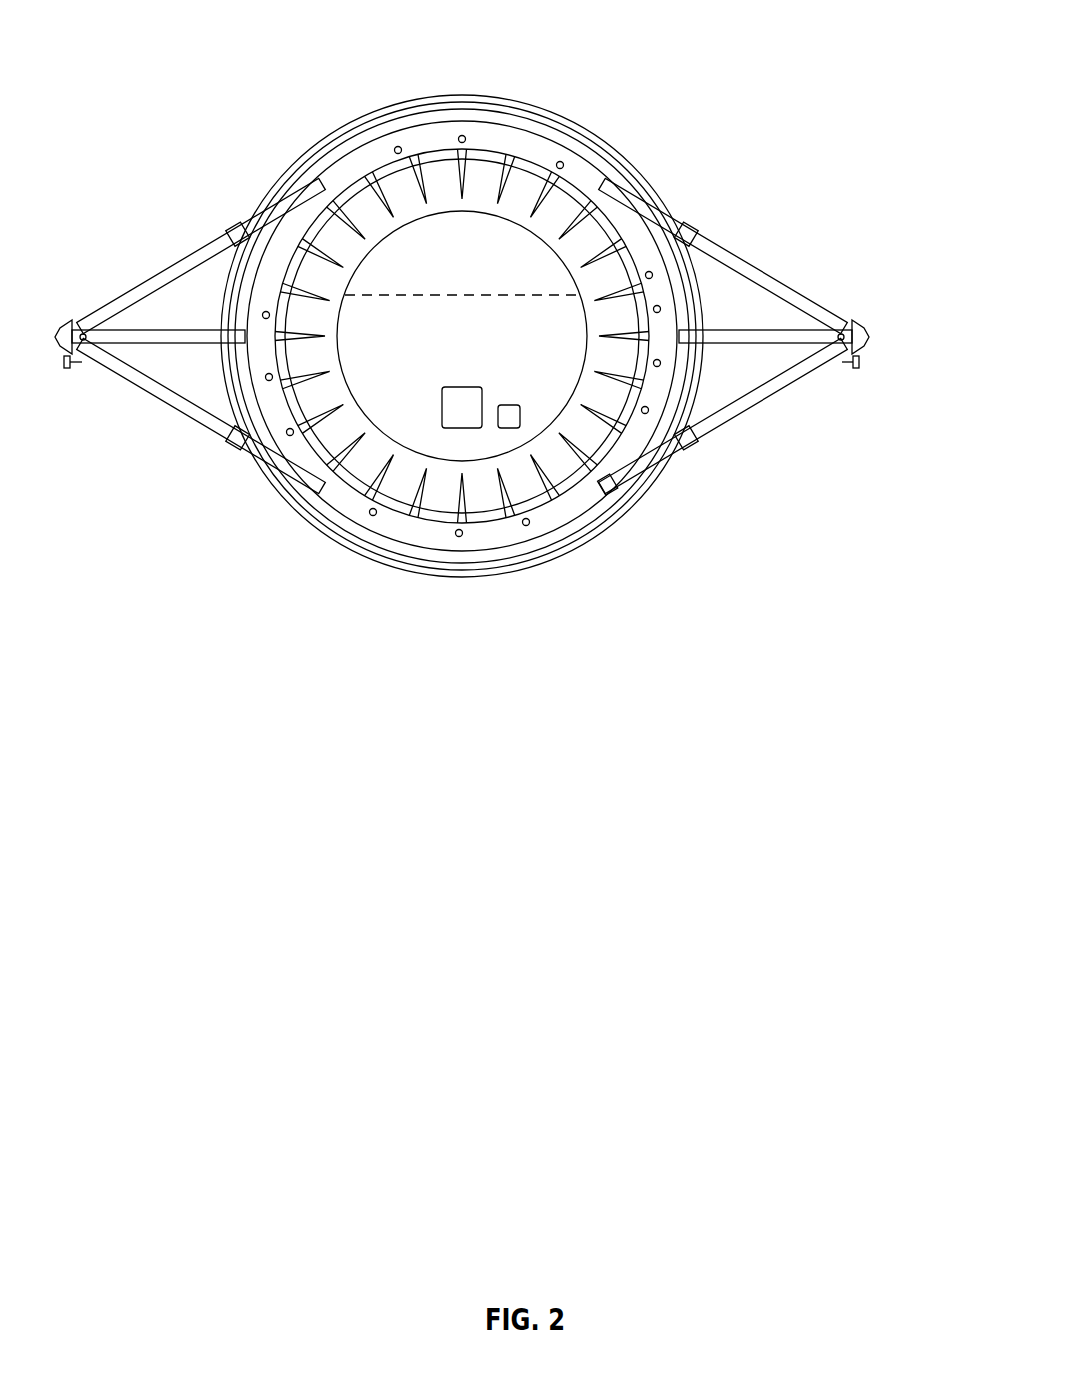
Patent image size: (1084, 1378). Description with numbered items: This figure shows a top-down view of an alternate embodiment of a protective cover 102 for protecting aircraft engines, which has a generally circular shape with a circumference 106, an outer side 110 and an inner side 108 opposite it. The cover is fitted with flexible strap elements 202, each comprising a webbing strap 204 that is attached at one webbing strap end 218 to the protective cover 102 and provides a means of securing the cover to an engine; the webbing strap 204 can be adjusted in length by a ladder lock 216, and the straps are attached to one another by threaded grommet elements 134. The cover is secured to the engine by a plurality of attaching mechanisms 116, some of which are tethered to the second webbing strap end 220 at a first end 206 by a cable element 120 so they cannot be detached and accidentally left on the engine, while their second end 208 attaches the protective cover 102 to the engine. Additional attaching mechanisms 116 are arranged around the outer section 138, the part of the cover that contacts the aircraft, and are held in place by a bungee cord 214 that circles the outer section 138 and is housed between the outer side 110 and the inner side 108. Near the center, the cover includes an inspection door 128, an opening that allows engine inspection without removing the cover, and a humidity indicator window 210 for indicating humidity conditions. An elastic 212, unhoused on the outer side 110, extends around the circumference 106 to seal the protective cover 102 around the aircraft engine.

The protective cover 102 is at (230, 100).
The circumference 106 is at (385, 565).
The inner side 108 is at (575, 122).
The outer side 110 is at (537, 150).
The attaching mechanisms 116 is at (393, 152).
The cable element 120 is at (74, 328).
The inspection door 128 is at (455, 405).
The threaded grommet elements 134 is at (845, 325).
The outer section 138 is at (387, 163).
The flexible strap elements 202 is at (125, 432).
The webbing strap 204 is at (193, 257).
The first end 206 is at (68, 322).
The second end 208 is at (67, 370).
The humidity indicator window 210 is at (510, 410).
The elastic 212 is at (320, 532).
The bungee cord 214 is at (455, 125).
The ladder lock 216 is at (238, 228).
The webbing strap end 218 is at (600, 490).
The second webbing strap end 220 is at (868, 334).